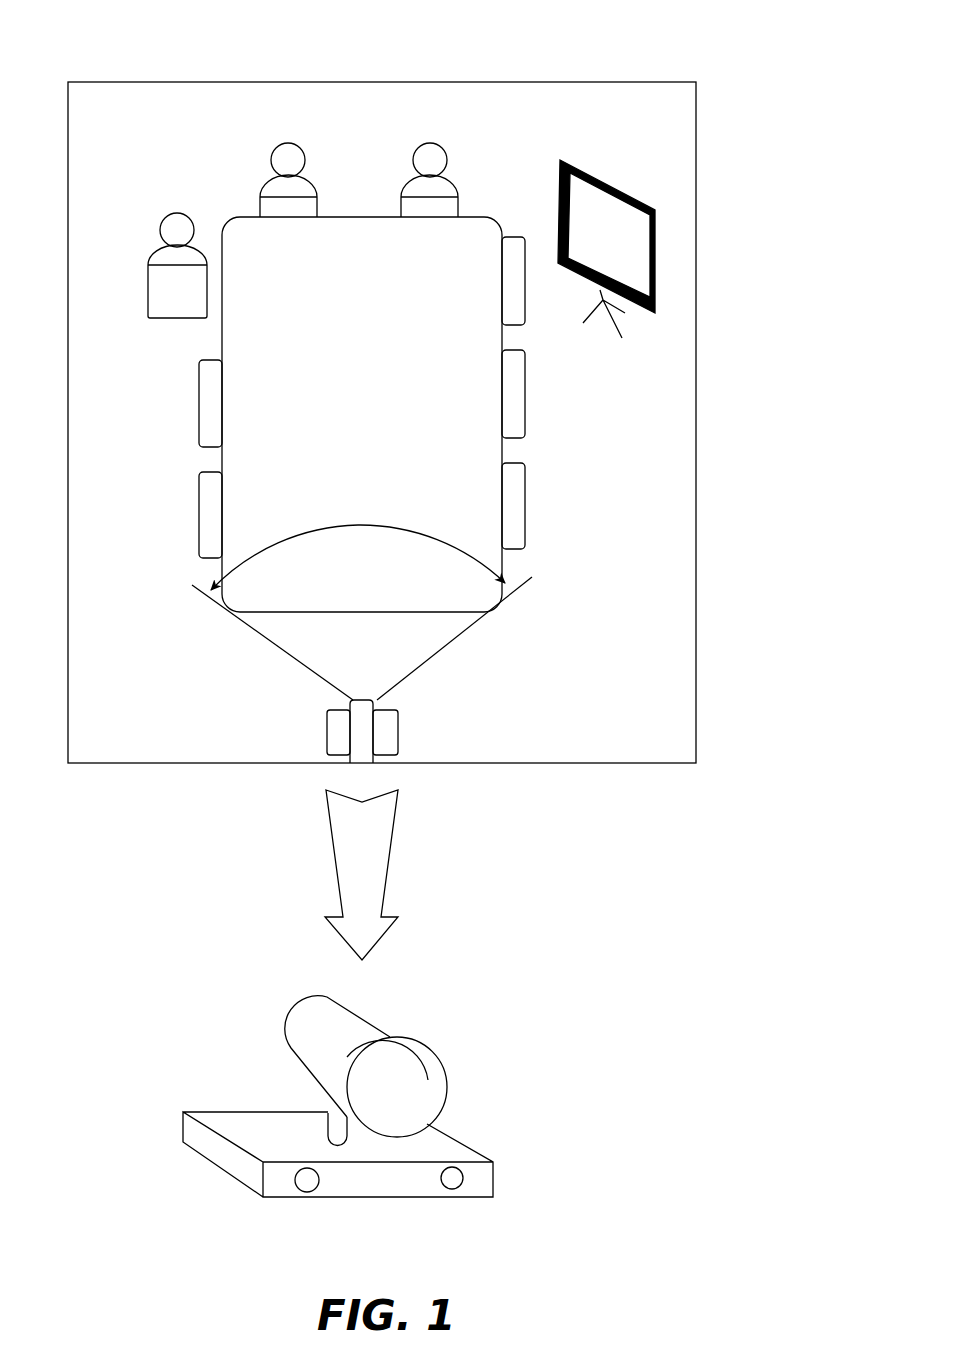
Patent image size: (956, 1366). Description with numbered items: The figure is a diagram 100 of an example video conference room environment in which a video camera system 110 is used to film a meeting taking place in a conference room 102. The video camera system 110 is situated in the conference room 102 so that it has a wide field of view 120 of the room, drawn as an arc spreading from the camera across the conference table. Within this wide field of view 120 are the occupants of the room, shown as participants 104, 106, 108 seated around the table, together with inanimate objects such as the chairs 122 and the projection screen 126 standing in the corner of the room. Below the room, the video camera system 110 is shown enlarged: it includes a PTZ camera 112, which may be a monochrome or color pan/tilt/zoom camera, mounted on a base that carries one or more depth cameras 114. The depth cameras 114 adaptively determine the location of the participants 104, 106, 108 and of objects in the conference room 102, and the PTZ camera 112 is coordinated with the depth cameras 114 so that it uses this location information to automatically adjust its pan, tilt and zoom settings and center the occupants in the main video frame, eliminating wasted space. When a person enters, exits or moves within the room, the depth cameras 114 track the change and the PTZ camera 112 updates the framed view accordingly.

The diagram 100 is at (735, 26).
The conference room 102 is at (494, 67).
The participant 104 is at (182, 194).
The participant 106 is at (293, 128).
The participant 108 is at (435, 136).
The video camera system 110 is at (325, 706).
The PTZ camera 112 is at (307, 1038).
The depth cameras 114 is at (321, 1199).
The wide field of view 120 is at (358, 504).
The chairs 122 is at (553, 395).
The projection screen 126 is at (597, 163).